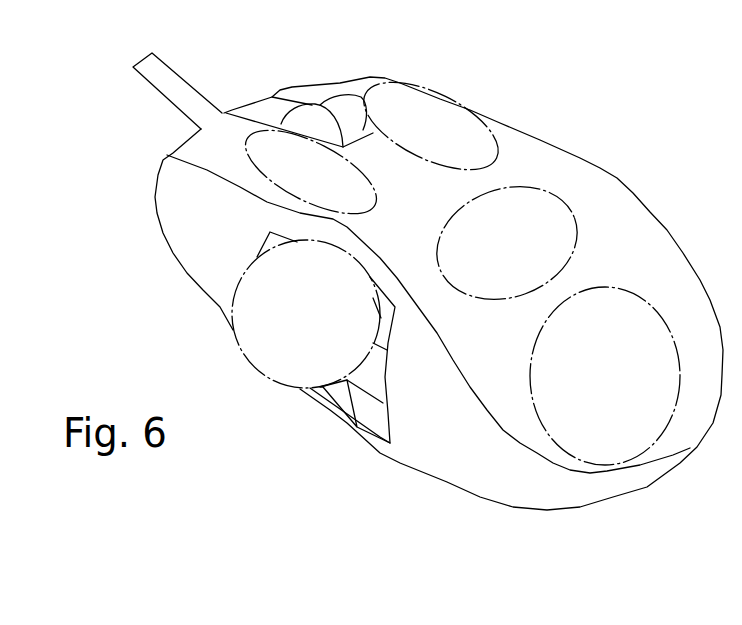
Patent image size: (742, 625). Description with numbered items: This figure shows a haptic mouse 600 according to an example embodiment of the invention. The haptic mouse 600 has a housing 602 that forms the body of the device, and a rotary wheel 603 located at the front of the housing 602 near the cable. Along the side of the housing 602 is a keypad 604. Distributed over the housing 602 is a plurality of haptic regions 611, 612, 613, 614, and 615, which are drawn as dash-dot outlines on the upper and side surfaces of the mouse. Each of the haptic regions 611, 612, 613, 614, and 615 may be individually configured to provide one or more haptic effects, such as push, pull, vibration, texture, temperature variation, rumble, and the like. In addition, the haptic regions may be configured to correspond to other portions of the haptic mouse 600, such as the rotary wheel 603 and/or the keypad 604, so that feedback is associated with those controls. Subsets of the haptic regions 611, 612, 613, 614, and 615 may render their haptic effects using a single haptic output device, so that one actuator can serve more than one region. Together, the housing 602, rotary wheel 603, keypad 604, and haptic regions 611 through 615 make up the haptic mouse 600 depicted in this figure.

The haptic mouse 600 is at (115, 304).
The housing 602 is at (437, 480).
The rotary wheel 603 is at (323, 113).
The keypad 604 is at (340, 407).
The haptic region 611 is at (327, 329).
The haptic region 612 is at (331, 188).
The haptic region 613 is at (440, 134).
The haptic region 614 is at (527, 257).
The haptic region 615 is at (627, 391).